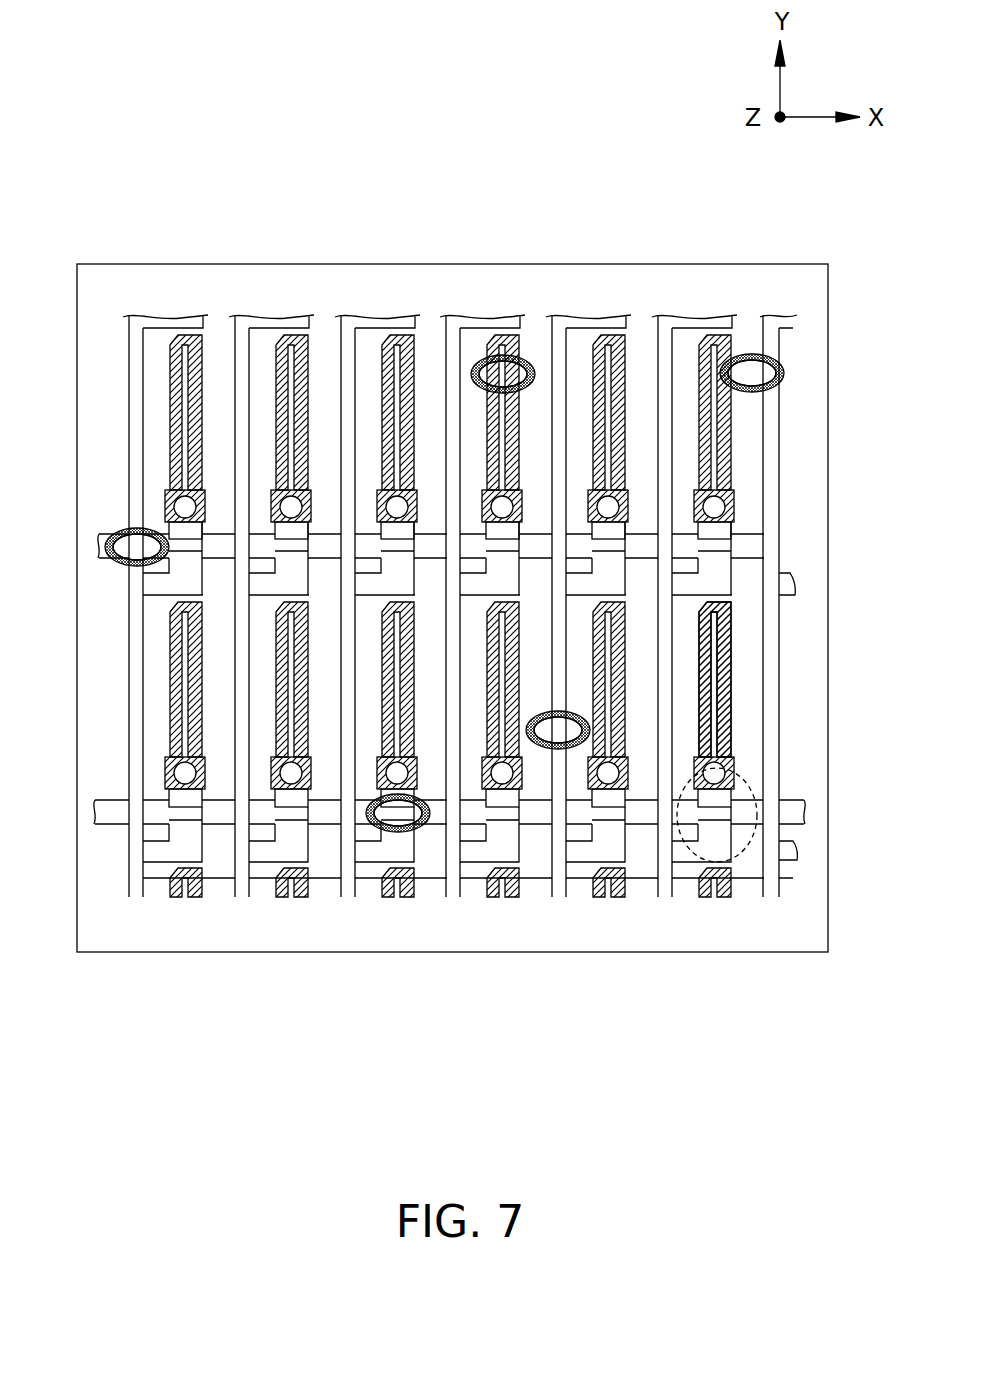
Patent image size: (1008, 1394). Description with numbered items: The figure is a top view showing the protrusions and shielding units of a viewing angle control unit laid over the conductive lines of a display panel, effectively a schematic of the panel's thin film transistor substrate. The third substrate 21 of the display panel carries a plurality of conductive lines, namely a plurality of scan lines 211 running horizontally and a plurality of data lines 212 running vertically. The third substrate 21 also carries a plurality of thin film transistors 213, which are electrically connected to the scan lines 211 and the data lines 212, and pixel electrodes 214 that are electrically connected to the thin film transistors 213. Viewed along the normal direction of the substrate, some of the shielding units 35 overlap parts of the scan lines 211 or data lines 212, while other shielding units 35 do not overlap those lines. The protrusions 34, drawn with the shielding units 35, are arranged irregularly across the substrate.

The third substrate 21 is at (808, 645).
The scan lines 211 is at (793, 537).
The data lines 212 is at (768, 742).
The thin film transistors 213 is at (757, 826).
The pixel electrodes 214 is at (735, 690).
The protrusions 34 is at (487, 337).
The shielding units 35 is at (528, 362).